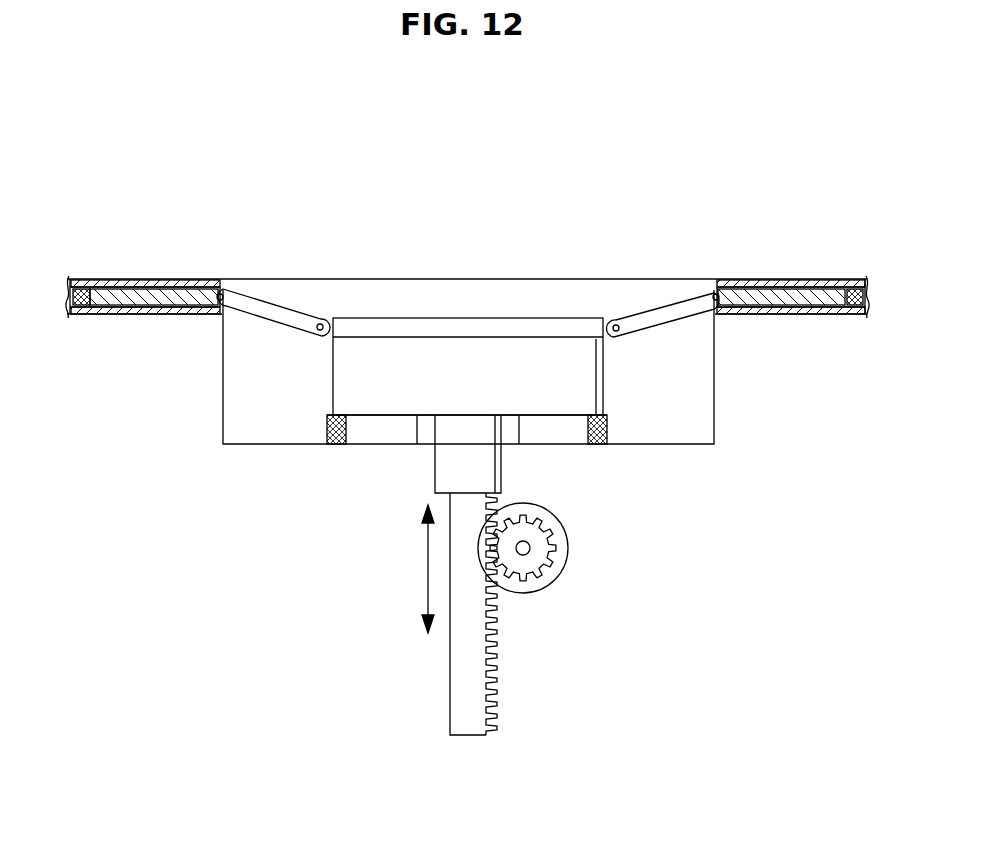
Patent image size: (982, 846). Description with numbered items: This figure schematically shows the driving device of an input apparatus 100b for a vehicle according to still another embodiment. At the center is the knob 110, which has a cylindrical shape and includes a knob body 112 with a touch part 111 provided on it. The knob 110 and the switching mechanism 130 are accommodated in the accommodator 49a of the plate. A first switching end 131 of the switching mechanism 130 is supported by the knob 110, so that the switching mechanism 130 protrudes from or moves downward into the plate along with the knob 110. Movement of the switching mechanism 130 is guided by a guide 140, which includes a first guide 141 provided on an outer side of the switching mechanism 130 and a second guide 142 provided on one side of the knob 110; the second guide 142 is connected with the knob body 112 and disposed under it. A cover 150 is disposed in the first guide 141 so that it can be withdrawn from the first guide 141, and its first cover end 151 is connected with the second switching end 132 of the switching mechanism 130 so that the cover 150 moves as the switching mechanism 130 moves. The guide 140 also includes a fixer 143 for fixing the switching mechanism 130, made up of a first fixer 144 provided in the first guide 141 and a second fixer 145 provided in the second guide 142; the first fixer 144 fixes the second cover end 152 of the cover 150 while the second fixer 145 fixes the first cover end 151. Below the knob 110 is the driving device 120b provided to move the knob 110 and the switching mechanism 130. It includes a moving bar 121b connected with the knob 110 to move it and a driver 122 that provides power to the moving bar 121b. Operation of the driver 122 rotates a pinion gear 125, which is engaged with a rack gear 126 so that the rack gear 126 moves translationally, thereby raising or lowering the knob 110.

The input apparatus 100b is at (326, 122).
The accommodator 49a is at (223, 375).
The knob 110 is at (503, 216).
The touch part 111 is at (415, 326).
The knob body 112 is at (500, 360).
The driving device 120b is at (519, 483).
The moving bar 121b is at (435, 456).
The driver 122 is at (562, 545).
The pinion gear 125 is at (535, 565).
The rack gear 126 is at (470, 728).
The switching mechanism 130 is at (277, 305).
The first switching end 131 is at (322, 322).
The second switching end 132 is at (222, 290).
The guide 140 is at (205, 492).
The first guide 141 is at (140, 315).
The second guide 142 is at (367, 420).
The fixer 143 is at (831, 388).
The first fixer 144 is at (83, 290).
The second fixer 145 is at (330, 446).
The cover 150 is at (163, 290).
The first cover end 151 is at (715, 291).
The second cover end 152 is at (845, 295).